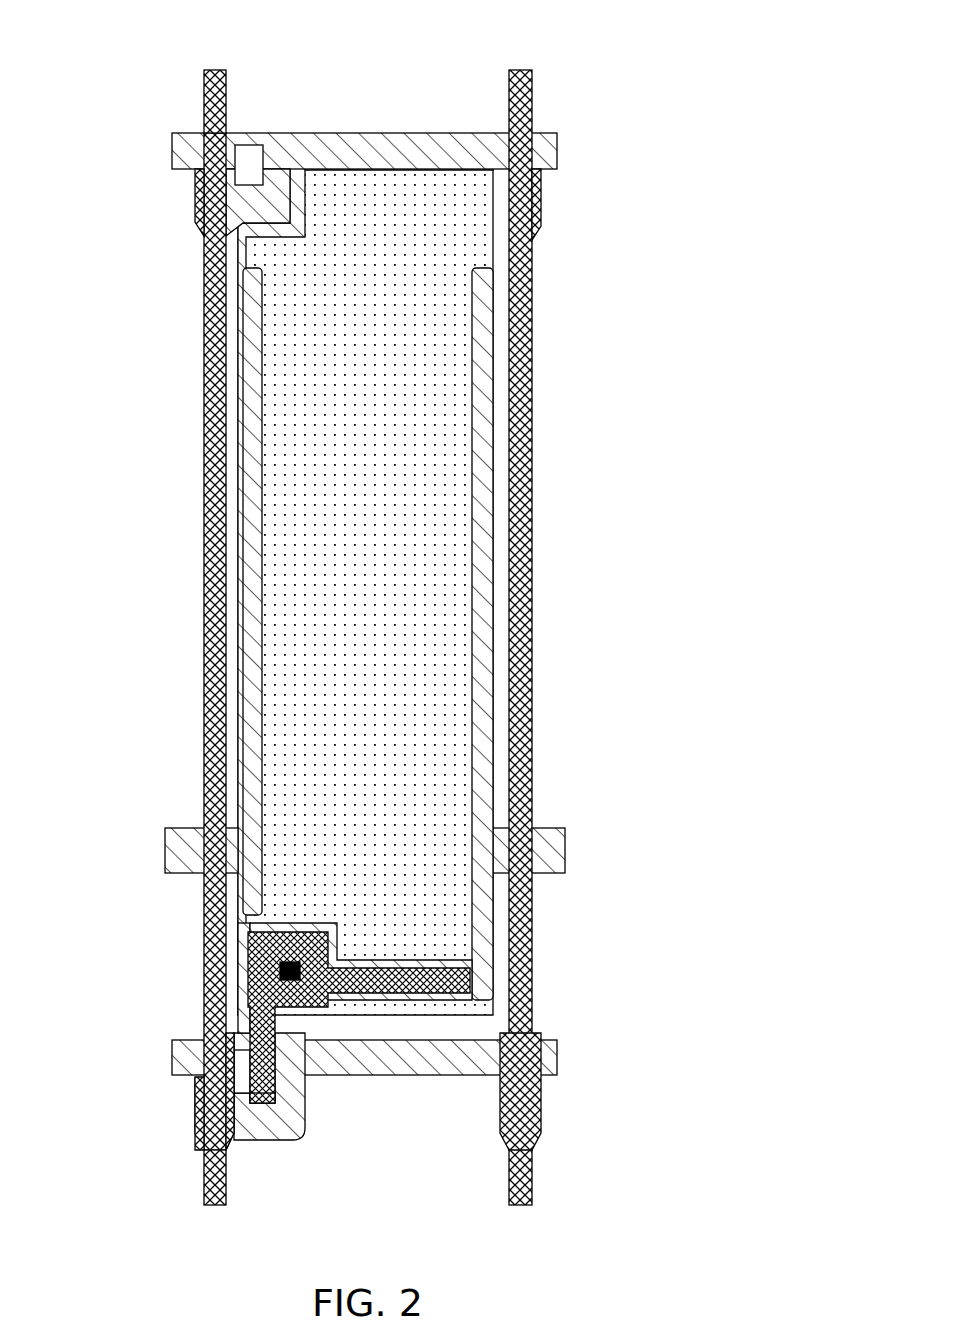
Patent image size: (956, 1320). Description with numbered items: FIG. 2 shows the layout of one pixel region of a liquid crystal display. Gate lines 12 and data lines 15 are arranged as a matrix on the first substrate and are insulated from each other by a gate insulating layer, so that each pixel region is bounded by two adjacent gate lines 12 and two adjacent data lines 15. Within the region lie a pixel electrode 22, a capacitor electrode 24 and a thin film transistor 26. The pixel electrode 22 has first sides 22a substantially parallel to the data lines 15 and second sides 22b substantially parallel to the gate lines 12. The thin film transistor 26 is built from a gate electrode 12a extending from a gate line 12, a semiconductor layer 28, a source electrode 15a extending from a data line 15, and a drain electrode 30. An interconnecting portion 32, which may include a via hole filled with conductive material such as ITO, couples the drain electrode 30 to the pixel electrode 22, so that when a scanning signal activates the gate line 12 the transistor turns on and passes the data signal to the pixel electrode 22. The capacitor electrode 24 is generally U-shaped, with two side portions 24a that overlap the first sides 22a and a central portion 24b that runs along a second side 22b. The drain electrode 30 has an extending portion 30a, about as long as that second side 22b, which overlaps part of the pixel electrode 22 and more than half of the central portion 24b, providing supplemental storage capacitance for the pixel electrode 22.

The gate line 12 is at (204, 110).
The gate electrode 12a is at (275, 200).
The data line 15 is at (228, 93).
The source electrode 15a is at (242, 1122).
The pixel electrode 22 is at (433, 205).
The first side 22a is at (243, 257).
The second side 22b is at (428, 152).
The capacitor electrode 24 is at (497, 950).
The side portion 24a is at (243, 470).
The central portion 24b is at (496, 952).
The thin film transistor 26 is at (265, 1105).
The semiconductor layer 28 is at (238, 1097).
The drain electrode 30 is at (247, 1030).
The extending portion 30a is at (407, 990).
The interconnecting portion 32 is at (286, 966).